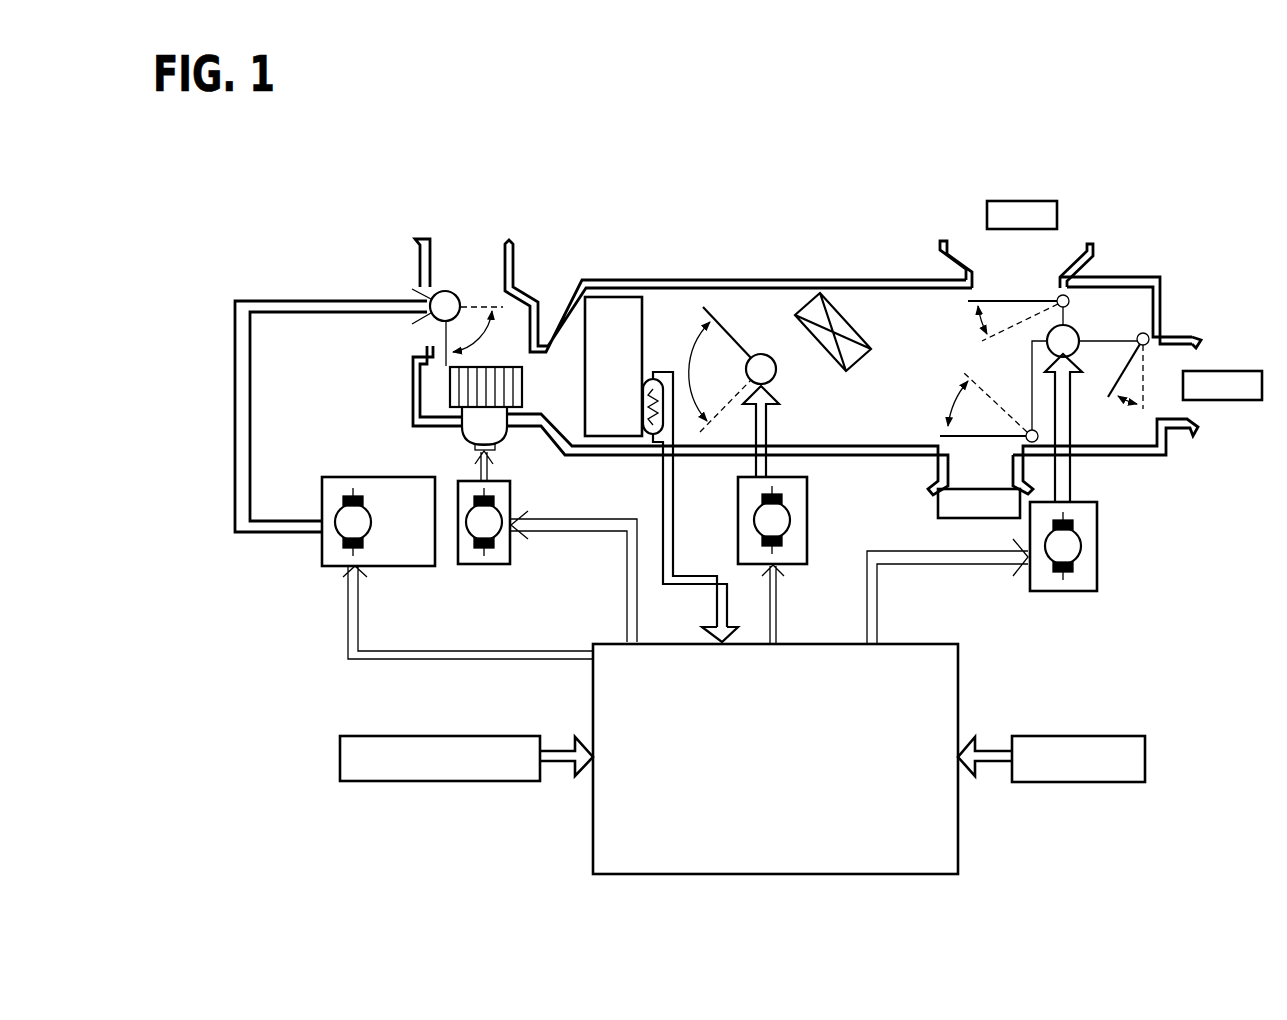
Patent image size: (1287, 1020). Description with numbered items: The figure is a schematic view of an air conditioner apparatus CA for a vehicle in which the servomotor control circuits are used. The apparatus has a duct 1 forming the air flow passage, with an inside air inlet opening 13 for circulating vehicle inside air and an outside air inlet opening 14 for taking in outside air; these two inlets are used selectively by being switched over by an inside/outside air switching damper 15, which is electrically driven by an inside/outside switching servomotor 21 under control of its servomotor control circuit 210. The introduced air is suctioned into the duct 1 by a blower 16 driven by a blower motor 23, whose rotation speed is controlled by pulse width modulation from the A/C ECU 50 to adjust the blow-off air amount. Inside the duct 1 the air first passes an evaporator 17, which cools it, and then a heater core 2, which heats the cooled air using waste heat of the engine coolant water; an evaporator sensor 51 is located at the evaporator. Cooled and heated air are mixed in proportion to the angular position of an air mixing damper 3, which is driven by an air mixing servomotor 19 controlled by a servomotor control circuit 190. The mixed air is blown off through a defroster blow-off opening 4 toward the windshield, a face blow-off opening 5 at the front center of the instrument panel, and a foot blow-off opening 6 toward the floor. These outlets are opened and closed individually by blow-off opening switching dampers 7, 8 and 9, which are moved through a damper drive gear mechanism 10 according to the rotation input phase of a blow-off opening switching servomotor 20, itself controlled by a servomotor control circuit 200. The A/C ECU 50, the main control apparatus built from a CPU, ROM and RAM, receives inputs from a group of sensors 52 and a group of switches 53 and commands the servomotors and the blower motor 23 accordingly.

The duct 1 is at (850, 281).
The heater core 2 is at (797, 305).
The air mixing damper 3 is at (717, 312).
The defroster blow-off opening 4 is at (940, 243).
The face blow-off opening 5 is at (1200, 337).
The foot blow-off opening 6 is at (933, 490).
The blow-off opening switching damper 7 is at (968, 302).
The blow-off opening switching damper 8 is at (1106, 395).
The blow-off opening switching damper 9 is at (940, 437).
The damper drive gear mechanism 10 is at (1080, 332).
The inside air inlet opening 13 is at (428, 240).
The outside air inlet opening 14 is at (412, 325).
The inside/outside air switching damper 15 is at (442, 337).
The blower 16 is at (462, 433).
The evaporator 17 is at (601, 298).
The air mixing servomotor 19 is at (758, 508).
The blow-off opening switching servomotor 20 is at (1078, 533).
The inside/outside switching servomotor 21 is at (335, 535).
The blower motor 23 is at (500, 515).
The A/C ECU 50 is at (960, 808).
The evaporator sensor 51 is at (658, 374).
The sensors 52 is at (1145, 752).
The switches 53 is at (340, 757).
The servomotor control circuit 190 is at (807, 492).
The servomotor control circuit 200 is at (1097, 548).
The servomotor control circuit 210 is at (335, 568).
The air conditioner apparatus CA is at (752, 186).